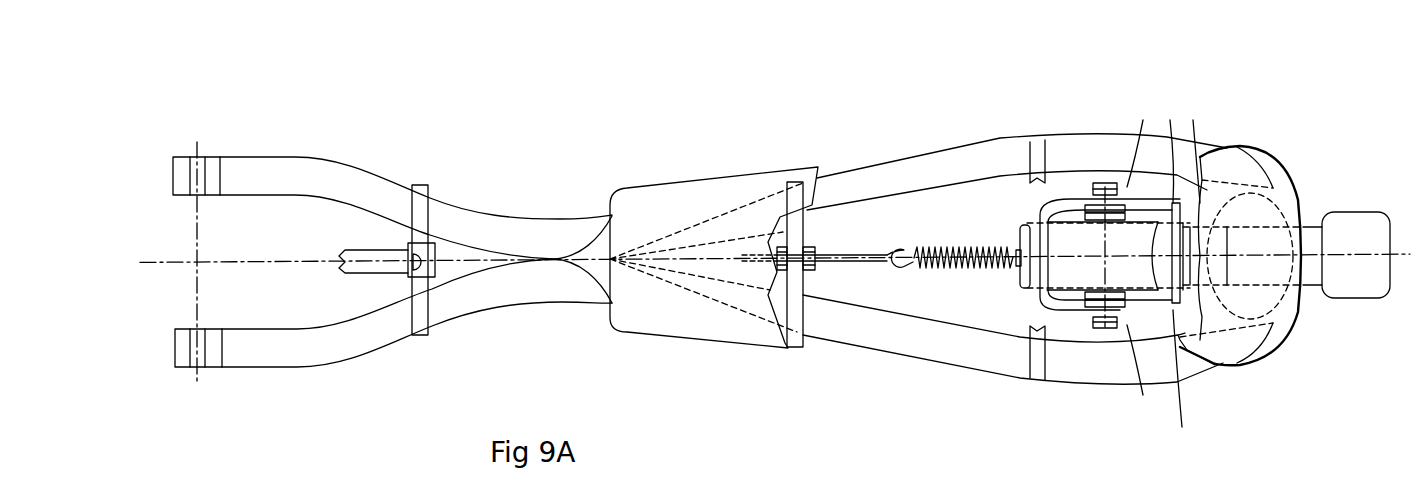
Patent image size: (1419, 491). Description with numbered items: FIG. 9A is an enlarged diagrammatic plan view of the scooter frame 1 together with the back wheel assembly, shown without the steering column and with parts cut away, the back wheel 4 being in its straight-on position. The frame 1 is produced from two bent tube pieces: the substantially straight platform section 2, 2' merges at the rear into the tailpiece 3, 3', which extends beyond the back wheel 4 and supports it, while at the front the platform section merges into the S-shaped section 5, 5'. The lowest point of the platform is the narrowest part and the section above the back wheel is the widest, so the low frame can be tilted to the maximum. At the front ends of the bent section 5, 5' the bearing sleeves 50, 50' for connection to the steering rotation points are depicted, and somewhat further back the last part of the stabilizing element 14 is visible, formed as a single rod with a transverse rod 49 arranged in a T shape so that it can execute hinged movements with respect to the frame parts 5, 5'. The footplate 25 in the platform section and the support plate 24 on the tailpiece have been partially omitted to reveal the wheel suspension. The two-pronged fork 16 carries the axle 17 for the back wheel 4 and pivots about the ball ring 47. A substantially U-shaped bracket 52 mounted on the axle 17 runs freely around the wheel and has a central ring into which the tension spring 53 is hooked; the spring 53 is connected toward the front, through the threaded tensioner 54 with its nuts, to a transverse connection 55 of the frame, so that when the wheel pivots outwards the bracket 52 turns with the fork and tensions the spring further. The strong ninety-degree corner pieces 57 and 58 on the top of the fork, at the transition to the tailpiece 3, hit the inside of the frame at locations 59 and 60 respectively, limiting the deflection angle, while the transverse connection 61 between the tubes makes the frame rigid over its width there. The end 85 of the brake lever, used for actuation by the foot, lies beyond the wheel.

The frame 1 is at (557, 207).
The platform section 2 is at (1013, 353).
The platform section 2' is at (1017, 149).
The tailpiece 3 is at (1240, 346).
The tailpiece 3' is at (1203, 212).
The back wheel 4 is at (1060, 290).
The S-shaped section 5 is at (417, 314).
The S-shaped section 5' is at (416, 207).
The stabilizing element 14 is at (358, 253).
The two-pronged fork 16 is at (1143, 170).
The axle 17 is at (1127, 200).
The support plate 24 is at (1263, 160).
The footplate 25 is at (673, 192).
The ball ring 47 is at (1277, 210).
The transverse rod 49 is at (433, 243).
The bearing sleeve 50 is at (215, 383).
The bearing sleeve 50' is at (217, 143).
The U-shaped bracket 52 is at (1030, 212).
The tension spring 53 is at (948, 247).
The tensioner 54 is at (840, 247).
The transverse connection 55 is at (795, 330).
The 90-degree corner piece 57 is at (1168, 157).
The 90-degree corner piece 58 is at (1188, 387).
The stop location 59 is at (1180, 148).
The stop location 60 is at (1195, 338).
The transverse connection 61 is at (1030, 138).
The brake lever end 85 is at (1362, 290).